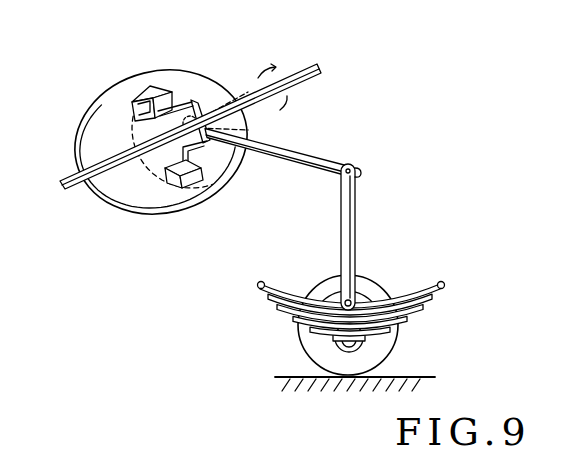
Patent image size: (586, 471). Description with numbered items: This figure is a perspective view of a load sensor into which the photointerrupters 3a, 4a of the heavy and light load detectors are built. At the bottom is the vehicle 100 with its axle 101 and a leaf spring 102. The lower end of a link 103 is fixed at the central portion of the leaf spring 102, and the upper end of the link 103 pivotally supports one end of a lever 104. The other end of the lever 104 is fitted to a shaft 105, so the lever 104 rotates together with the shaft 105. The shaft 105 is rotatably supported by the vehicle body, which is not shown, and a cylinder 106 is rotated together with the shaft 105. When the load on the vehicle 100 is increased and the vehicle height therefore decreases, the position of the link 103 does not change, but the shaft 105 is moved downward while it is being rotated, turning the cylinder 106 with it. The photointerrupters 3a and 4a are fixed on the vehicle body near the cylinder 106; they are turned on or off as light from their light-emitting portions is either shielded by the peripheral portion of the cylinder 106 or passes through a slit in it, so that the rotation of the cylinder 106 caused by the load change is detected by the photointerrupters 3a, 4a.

The photointerrupter 3a is at (151, 86).
The photointerrupter 4a is at (196, 184).
The vehicle 100 is at (397, 339).
The axle 101 is at (338, 340).
The leaf spring 102 is at (407, 296).
The link 103 is at (357, 211).
The lever 104 is at (308, 148).
The shaft 105 is at (295, 72).
The cylinder 106 is at (92, 106).